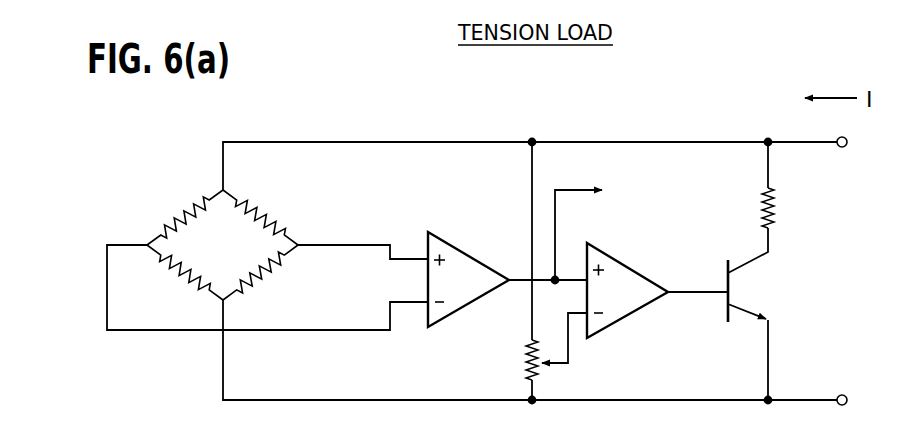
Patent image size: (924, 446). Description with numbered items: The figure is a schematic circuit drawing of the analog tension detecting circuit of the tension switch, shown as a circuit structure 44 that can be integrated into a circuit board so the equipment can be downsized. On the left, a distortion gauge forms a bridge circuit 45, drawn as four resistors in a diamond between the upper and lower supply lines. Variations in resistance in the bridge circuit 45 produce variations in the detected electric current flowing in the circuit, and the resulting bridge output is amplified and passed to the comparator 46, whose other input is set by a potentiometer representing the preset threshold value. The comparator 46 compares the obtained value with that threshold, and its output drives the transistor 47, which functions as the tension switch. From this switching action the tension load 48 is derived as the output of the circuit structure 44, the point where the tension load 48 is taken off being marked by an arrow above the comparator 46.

The circuit structure 44 is at (742, 117).
The bridge circuit 45 is at (193, 204).
The comparator 46 is at (626, 262).
The transistor 47 is at (743, 295).
The tension load 48 is at (573, 188).